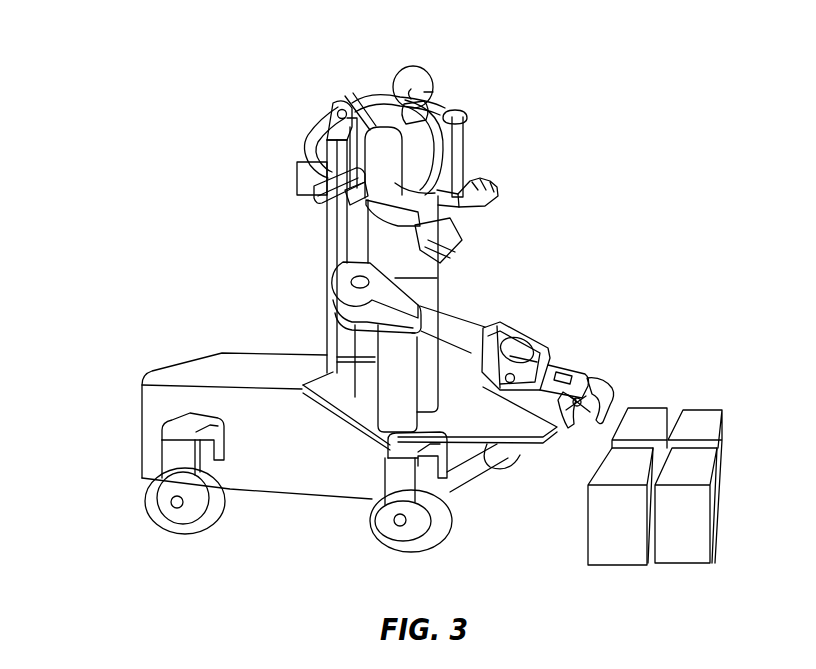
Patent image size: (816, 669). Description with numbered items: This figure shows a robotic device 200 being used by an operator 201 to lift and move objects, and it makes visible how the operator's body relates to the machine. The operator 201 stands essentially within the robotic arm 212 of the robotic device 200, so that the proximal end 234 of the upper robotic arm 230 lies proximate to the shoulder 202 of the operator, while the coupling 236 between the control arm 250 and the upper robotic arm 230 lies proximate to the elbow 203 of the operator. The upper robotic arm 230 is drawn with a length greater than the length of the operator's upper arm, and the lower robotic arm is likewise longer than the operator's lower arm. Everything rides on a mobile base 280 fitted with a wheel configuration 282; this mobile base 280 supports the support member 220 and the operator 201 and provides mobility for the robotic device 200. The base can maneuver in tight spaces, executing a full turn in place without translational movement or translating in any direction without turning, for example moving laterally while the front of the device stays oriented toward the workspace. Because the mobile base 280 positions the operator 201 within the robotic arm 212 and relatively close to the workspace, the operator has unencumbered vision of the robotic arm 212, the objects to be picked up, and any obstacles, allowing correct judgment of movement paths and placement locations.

The robotic device 200 is at (333, 45).
The operator 201 is at (420, 80).
The shoulder 202 is at (327, 130).
The elbow 203 is at (352, 242).
The robotic arm 212 is at (311, 302).
The support member 220 is at (307, 176).
The upper robotic arm 230 is at (352, 205).
The proximal end 234 is at (338, 112).
The coupling 236 is at (317, 203).
The control arm 250 is at (318, 267).
The mobile base 280 is at (166, 391).
The wheel configuration 282 is at (365, 520).